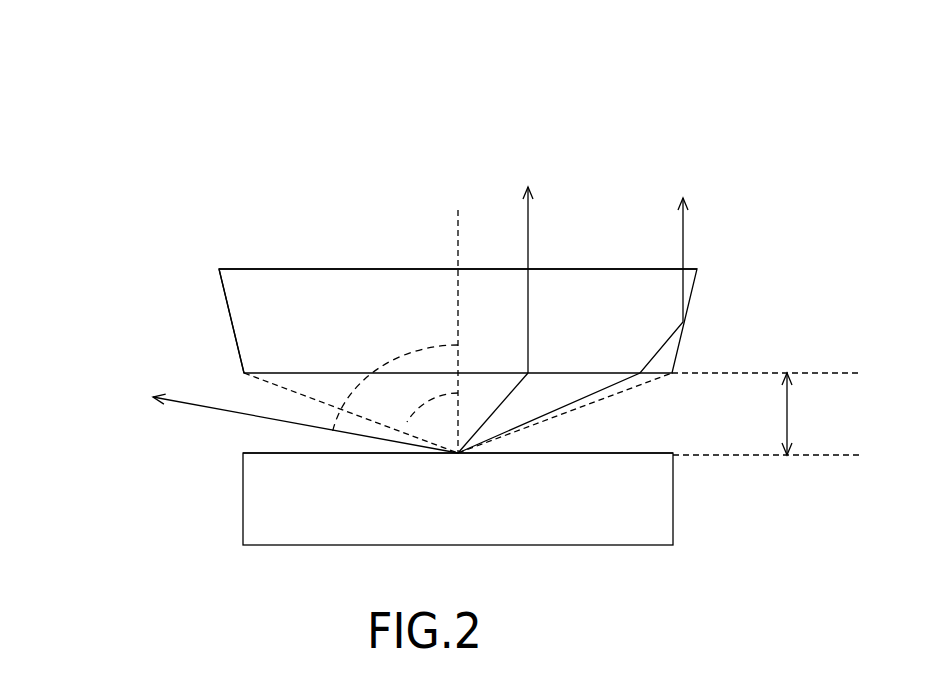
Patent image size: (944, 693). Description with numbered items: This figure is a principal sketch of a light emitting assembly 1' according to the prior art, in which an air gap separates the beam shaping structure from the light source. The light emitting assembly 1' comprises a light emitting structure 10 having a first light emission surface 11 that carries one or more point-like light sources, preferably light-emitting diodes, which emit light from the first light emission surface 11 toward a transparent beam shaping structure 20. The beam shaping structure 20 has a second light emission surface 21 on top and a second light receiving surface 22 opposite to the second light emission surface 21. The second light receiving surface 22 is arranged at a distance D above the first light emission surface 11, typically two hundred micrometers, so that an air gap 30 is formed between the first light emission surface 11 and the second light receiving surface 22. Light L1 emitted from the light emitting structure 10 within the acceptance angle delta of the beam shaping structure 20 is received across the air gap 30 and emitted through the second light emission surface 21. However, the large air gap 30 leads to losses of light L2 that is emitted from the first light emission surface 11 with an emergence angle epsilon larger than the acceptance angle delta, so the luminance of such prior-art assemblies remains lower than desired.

The light emitting assembly 1' is at (331, 251).
The light emitting structure 10 is at (243, 500).
The first light emission surface 11 is at (648, 450).
The transparent beam shaping structure 20 is at (232, 322).
The second light emission surface 21 is at (586, 268).
The second light receiving surface 22 is at (287, 367).
The air gap 30 is at (766, 414).
The light received within acceptance angle L1 is at (474, 299).
The lost light L2 is at (263, 421).